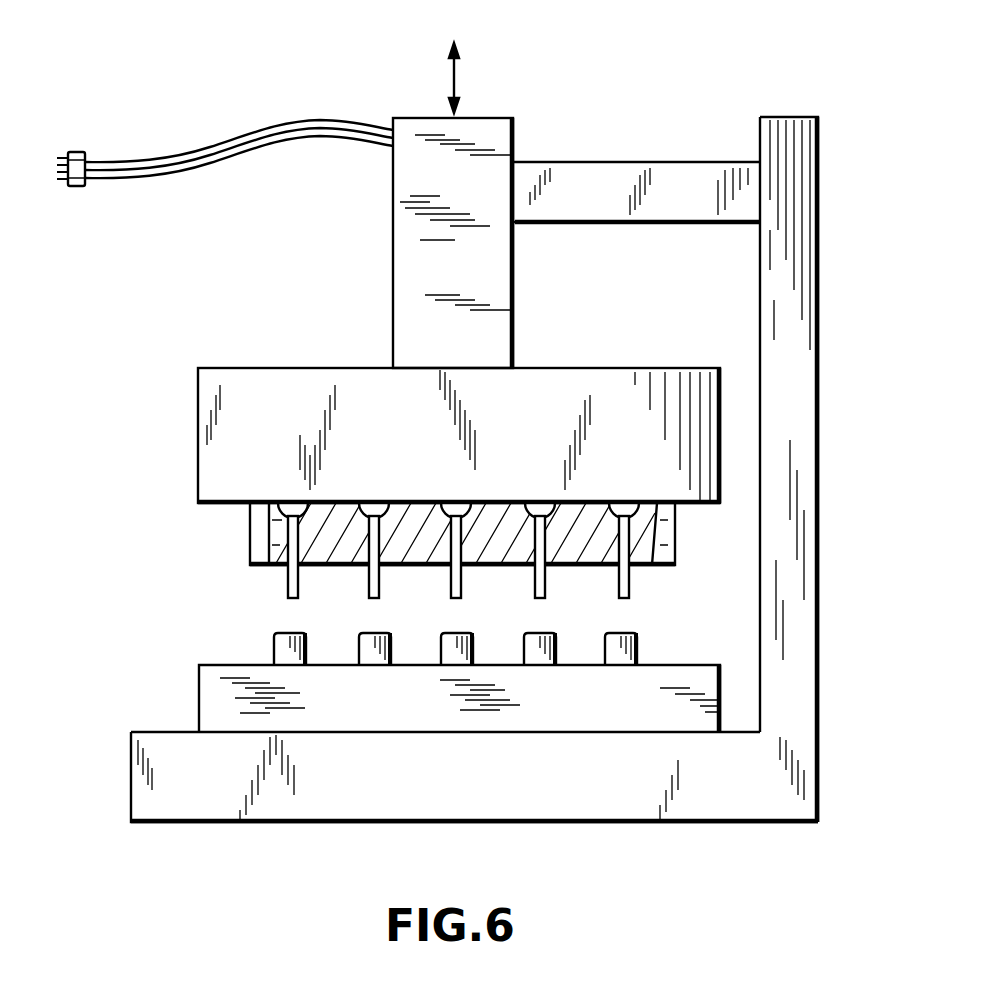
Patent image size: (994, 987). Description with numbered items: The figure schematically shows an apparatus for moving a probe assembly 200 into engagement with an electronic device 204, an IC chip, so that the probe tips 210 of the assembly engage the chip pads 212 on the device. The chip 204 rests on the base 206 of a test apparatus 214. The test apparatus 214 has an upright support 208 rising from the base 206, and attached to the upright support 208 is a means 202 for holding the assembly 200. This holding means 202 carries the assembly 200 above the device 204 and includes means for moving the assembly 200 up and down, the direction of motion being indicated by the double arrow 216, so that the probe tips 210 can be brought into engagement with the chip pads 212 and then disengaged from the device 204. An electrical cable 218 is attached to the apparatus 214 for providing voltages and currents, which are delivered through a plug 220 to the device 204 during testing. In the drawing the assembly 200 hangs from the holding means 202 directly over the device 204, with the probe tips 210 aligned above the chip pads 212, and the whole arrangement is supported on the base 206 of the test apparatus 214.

The assembly 200 is at (292, 368).
The means for holding assembly 202 is at (515, 318).
The electronic device 204 is at (210, 703).
The base 206 is at (157, 783).
The upright support 208 is at (760, 313).
The probe tips 210 is at (285, 590).
The chip pads 212 is at (273, 650).
The test apparatus 214 is at (666, 419).
The double arrow 216 is at (456, 85).
The electrical cable 218 is at (205, 143).
The plug 220 is at (80, 187).